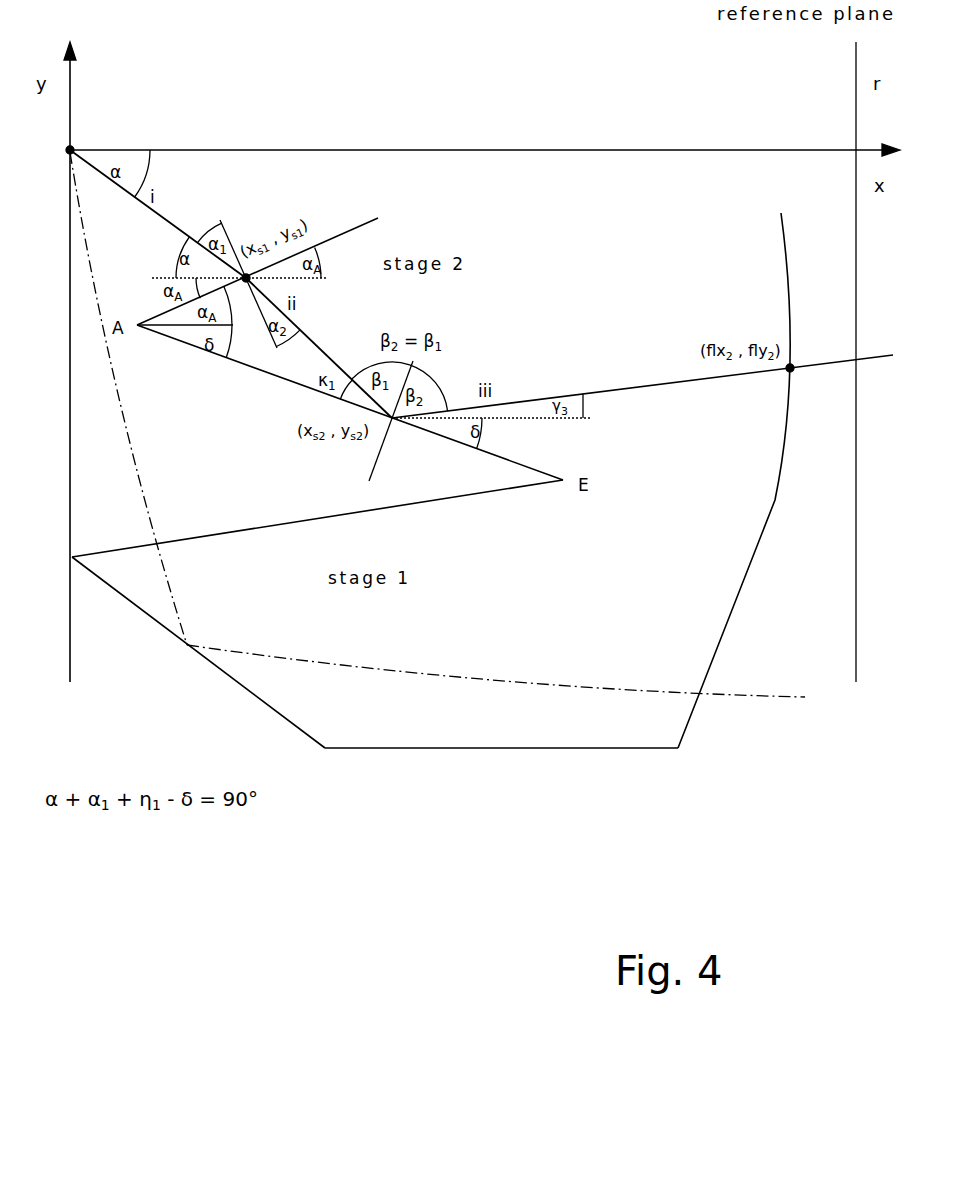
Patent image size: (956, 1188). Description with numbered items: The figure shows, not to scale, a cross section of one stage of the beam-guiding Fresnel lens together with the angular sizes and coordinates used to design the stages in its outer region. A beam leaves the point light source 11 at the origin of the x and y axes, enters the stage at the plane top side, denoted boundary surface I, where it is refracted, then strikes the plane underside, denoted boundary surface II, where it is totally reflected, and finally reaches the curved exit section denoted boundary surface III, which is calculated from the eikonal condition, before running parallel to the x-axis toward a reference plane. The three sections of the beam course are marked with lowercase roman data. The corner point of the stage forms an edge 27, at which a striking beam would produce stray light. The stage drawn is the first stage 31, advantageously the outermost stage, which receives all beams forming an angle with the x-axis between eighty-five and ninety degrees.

The point light source 11 is at (70, 150).
The edge 27 is at (413, 450).
The first stage 31 is at (478, 624).
The boundary surface I is at (340, 515).
The boundary surface II is at (250, 692).
The boundary surface III is at (775, 515).